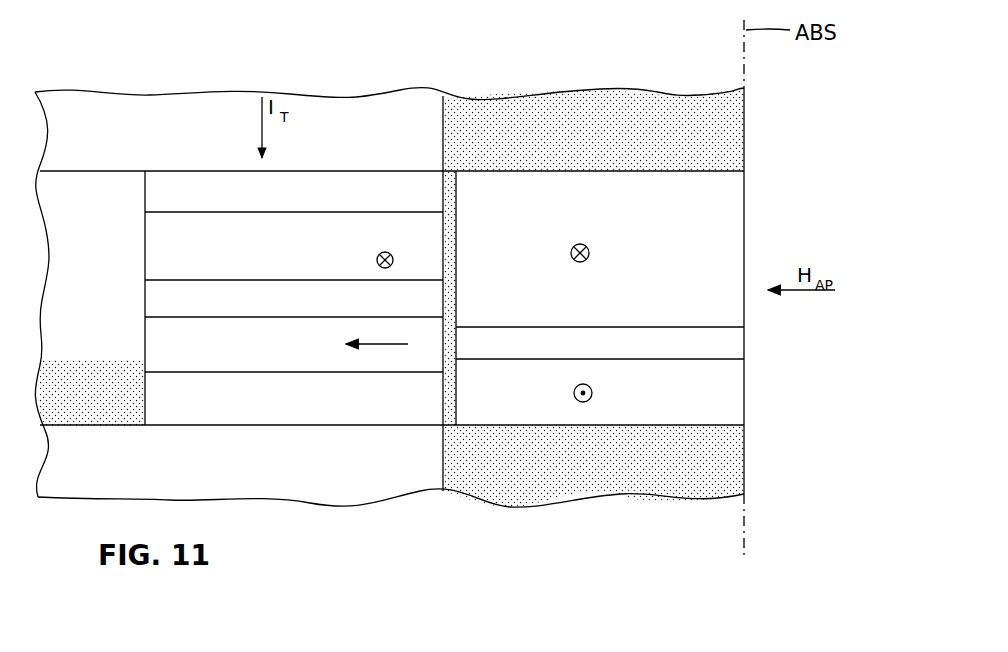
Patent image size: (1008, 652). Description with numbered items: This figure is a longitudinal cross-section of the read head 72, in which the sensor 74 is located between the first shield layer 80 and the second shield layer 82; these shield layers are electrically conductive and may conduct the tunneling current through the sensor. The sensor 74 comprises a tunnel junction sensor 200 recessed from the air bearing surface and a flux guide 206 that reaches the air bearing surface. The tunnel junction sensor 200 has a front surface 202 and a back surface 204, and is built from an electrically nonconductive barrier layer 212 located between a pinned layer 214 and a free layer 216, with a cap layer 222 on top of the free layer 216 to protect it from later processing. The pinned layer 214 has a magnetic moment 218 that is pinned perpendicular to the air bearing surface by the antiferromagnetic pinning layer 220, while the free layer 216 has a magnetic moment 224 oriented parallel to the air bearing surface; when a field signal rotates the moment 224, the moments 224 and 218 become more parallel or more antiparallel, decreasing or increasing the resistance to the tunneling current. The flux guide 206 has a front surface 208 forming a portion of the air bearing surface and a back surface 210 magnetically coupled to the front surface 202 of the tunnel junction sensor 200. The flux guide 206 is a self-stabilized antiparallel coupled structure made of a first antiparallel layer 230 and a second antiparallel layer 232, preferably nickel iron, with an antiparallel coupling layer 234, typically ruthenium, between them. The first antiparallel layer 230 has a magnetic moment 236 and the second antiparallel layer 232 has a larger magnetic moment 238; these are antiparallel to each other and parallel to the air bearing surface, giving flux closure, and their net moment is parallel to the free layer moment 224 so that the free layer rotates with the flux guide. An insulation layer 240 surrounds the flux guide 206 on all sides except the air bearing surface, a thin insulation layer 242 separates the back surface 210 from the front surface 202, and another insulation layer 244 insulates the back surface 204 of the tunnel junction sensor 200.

The read head 72 is at (155, 55).
The second shield layer 82 is at (236, 98).
The first shield layer 80 is at (343, 500).
The sensor 74 is at (495, 163).
The insulation layer 240 is at (585, 103).
The flux guide 206 is at (678, 164).
The tunnel junction sensor 200 is at (195, 165).
The front surface of flux guide 208 is at (746, 200).
The cap layer 222 is at (150, 192).
The free layer 216 is at (150, 229).
The back surface of tunnel junction sensor 204 is at (144, 258).
The magnetic moment of free layer 224 is at (376, 260).
The front surface of tunnel junction sensor 202 is at (457, 240).
The barrier layer 212 is at (150, 298).
The back surface of flux guide 210 is at (446, 300).
The pinned layer 214 is at (150, 346).
The magnetic moment of pinned layer 218 is at (378, 347).
The antiferromagnetic pinning layer 220 is at (192, 413).
The insulation layer 244 is at (90, 410).
The second antiparallel layer 232 is at (733, 232).
The magnetic moment of second AP layer 238 is at (573, 245).
The antiparallel coupling layer 234 is at (733, 342).
The first antiparallel layer 230 is at (733, 392).
The insulation layer 242 is at (458, 392).
The magnetic moment of first AP layer 236 is at (588, 404).